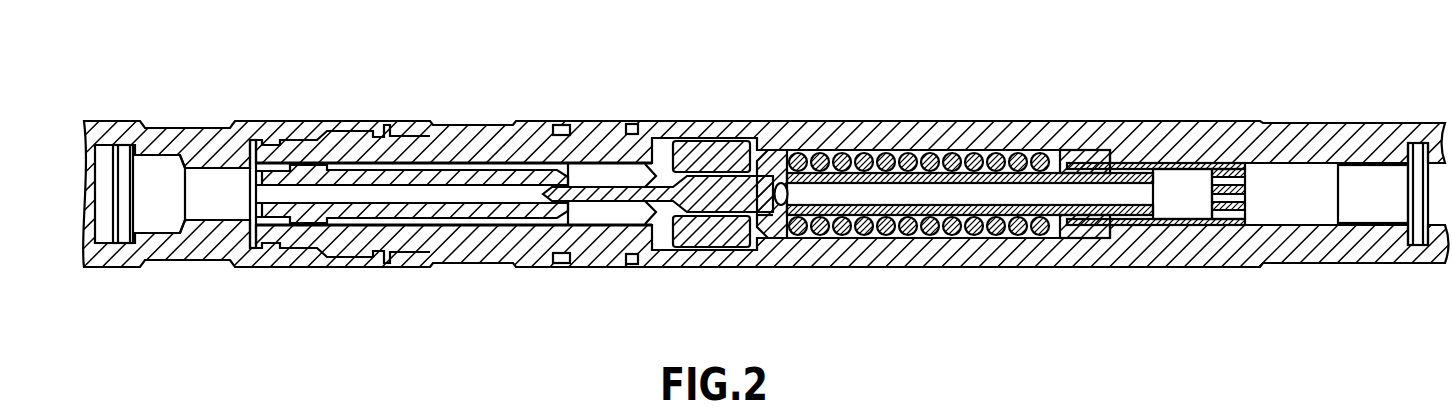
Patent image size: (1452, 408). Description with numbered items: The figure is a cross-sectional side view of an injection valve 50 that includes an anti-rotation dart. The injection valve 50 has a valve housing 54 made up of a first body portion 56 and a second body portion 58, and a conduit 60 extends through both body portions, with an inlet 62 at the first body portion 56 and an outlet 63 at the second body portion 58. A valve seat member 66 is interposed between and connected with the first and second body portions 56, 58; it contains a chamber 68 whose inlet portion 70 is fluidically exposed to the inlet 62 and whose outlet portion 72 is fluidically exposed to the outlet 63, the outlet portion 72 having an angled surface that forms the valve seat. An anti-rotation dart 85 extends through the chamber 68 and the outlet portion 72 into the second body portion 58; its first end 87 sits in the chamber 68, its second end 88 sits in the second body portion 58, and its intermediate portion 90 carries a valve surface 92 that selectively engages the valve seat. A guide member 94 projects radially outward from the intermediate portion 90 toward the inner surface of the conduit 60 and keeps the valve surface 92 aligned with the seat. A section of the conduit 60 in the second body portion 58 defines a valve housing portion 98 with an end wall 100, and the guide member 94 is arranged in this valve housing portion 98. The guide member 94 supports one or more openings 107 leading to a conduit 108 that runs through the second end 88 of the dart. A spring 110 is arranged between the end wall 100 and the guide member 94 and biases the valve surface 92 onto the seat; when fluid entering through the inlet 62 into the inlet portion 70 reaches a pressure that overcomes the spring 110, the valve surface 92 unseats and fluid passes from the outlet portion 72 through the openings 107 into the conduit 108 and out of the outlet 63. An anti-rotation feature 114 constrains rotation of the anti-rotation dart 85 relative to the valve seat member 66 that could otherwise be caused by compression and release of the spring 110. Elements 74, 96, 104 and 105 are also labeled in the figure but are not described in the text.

The injection valve 50 is at (411, 102).
The valve housing 54 is at (300, 118).
The first body portion 56 is at (216, 127).
The second body portion 58 is at (1157, 242).
The conduit 60 is at (210, 208).
The inlet 62 is at (100, 232).
The outlet 63 is at (1437, 193).
The valve seat member 66 is at (485, 242).
The chamber 68 is at (590, 212).
The inlet portion 70 is at (260, 210).
The outlet portion 72 is at (737, 176).
The lower piston ring 74 is at (703, 216).
The anti-rotation dart 85 is at (701, 192).
The first end 87 is at (277, 208).
The second end 88 is at (1127, 208).
The intermediate portion 90 is at (663, 196).
The valve surface 92 is at (690, 181).
The guide member 94 is at (773, 148).
The upper spring 96 is at (1028, 165).
The valve housing portion 98 is at (935, 237).
The end wall 100 is at (1107, 163).
The upper tube wall 104 is at (522, 178).
The tube bore 105 is at (397, 195).
The openings 107 is at (775, 215).
The conduit 108 is at (983, 195).
The spring 110 is at (1003, 226).
The anti-rotation feature 114 is at (757, 212).